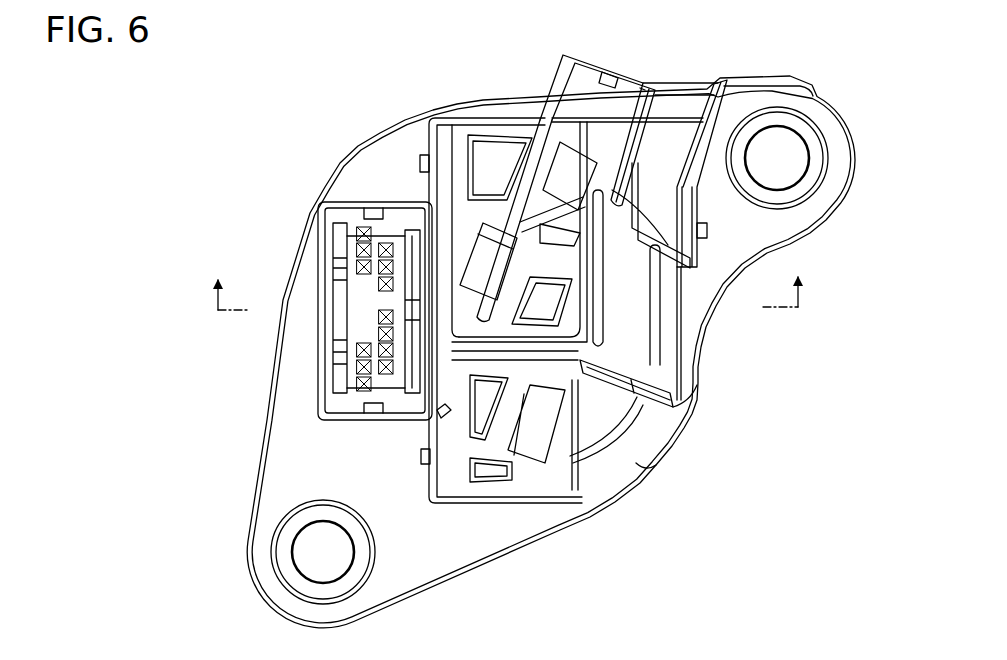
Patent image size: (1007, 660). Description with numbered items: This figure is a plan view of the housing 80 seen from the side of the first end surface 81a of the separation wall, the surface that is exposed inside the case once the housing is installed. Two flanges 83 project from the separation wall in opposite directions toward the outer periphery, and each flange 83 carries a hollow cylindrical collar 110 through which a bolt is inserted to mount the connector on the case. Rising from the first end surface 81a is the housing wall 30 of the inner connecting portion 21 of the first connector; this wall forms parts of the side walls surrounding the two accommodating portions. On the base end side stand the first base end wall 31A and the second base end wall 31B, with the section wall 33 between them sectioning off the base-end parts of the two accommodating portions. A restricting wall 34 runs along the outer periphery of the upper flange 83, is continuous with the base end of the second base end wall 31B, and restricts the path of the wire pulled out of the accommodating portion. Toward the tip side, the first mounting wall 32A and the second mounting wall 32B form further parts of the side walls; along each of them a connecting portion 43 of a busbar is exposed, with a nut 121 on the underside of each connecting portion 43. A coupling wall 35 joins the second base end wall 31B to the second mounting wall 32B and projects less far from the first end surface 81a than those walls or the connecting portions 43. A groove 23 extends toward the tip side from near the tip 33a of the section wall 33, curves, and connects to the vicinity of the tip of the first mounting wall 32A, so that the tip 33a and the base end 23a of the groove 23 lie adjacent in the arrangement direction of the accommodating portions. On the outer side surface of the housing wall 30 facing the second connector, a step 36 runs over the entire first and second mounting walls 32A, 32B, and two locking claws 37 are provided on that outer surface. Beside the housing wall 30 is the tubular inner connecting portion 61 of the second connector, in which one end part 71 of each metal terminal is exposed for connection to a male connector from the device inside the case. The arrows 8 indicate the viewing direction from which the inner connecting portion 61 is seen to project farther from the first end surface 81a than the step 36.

The housing 80 is at (868, 84).
The flange 83 is at (843, 162).
The collar 110 is at (823, 190).
The restricting wall 34 is at (787, 78).
The inner connecting portion 61 is at (318, 378).
The one end part of metal terminal 71 is at (358, 334).
The nut 121 is at (480, 260).
The housing wall 30 is at (567, 510).
The first mounting wall 32A is at (528, 180).
The second mounting wall 32B is at (517, 490).
The connecting portion 43 is at (513, 262).
The coupling wall 35 is at (636, 463).
The first end surface 81a is at (690, 404).
The inner connecting portion 21 is at (641, 158).
The first base end wall 31A is at (565, 65).
The second base end wall 31B is at (704, 86).
The section wall 33 is at (640, 128).
The tip of section wall 33a is at (682, 264).
The groove 23 is at (590, 330).
The base end of groove 23a is at (545, 175).
The locking claw 37 is at (420, 163).
The step 36 is at (437, 412).
The section view direction 8 is at (509, 278).